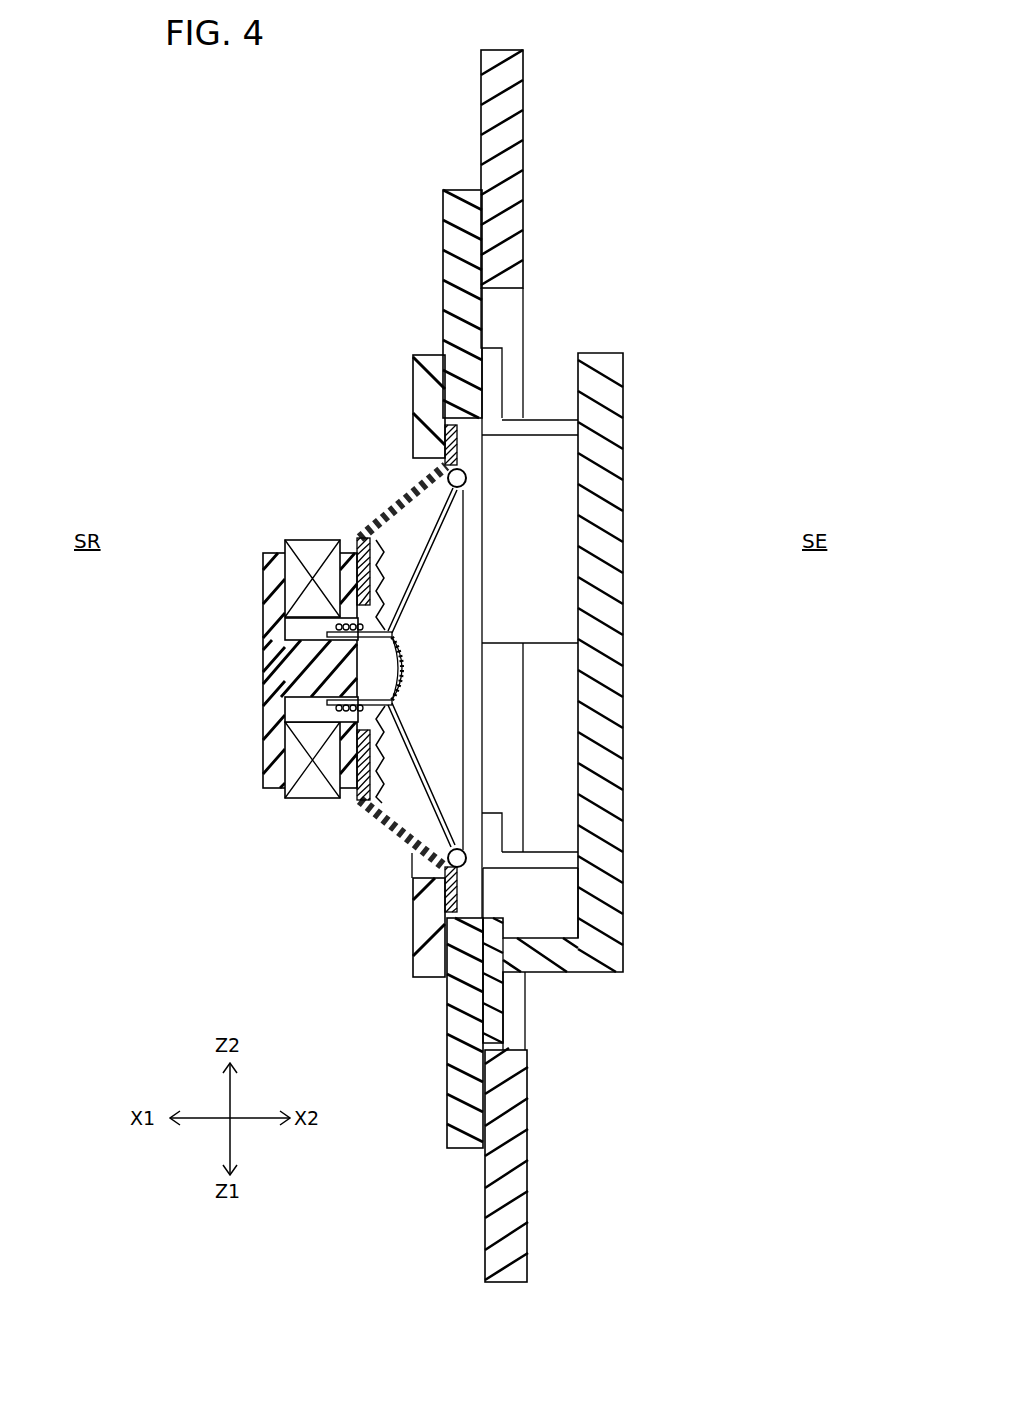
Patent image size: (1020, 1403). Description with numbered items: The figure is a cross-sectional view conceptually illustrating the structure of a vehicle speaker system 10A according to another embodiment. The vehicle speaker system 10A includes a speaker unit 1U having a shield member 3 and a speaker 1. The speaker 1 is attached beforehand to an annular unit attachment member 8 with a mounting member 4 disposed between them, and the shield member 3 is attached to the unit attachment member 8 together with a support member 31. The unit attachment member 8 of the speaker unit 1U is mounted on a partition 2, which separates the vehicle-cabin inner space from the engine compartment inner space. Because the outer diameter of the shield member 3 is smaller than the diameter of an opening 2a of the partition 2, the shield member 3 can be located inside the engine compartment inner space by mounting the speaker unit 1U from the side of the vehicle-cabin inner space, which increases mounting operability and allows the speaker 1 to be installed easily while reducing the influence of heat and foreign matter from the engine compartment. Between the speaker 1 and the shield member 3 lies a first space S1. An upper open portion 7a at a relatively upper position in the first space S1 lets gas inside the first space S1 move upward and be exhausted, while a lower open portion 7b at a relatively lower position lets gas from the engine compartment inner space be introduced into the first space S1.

The vehicle speaker system 10A is at (131, 159).
The speaker unit 1U is at (319, 669).
The speaker 1 is at (283, 553).
The partition 2 is at (629, 666).
The opening 2a is at (478, 518).
The shield member 3 is at (618, 362).
The support member 31 is at (562, 955).
The mounting member 4 is at (417, 415).
The upper open portion 7a is at (538, 400).
The lower open portion 7b is at (552, 715).
The unit attachment member 8 is at (455, 295).
The first space S1 is at (530, 539).